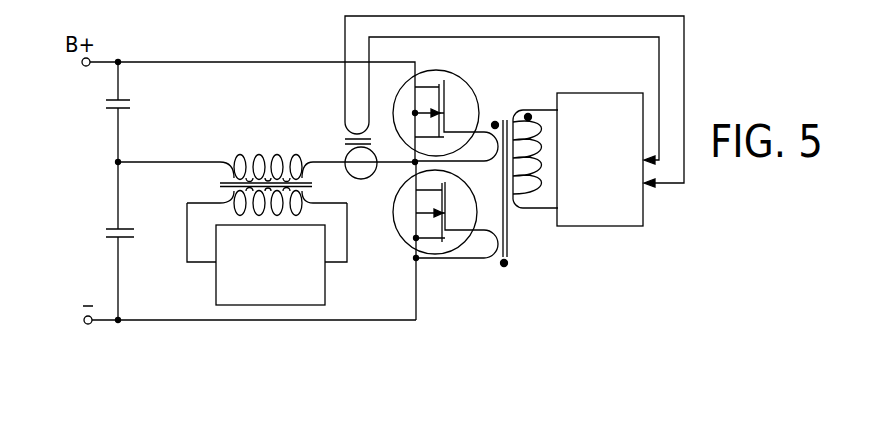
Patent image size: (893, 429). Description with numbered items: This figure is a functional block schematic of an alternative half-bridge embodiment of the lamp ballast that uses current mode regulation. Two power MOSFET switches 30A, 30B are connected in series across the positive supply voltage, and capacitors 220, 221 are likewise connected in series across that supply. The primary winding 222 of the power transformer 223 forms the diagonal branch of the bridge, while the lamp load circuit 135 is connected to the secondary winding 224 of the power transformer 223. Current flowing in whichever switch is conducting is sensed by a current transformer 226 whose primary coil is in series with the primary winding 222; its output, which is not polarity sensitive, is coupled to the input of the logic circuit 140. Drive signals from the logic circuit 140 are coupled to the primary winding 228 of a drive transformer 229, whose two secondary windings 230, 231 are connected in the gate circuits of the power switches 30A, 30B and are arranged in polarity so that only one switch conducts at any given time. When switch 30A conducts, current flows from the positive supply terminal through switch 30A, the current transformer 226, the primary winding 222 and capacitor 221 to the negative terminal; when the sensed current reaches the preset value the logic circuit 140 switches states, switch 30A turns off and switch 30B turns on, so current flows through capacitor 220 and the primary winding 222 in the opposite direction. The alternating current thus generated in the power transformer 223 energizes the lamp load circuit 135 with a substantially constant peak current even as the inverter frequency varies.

The capacitor 220 is at (108, 99).
The capacitor 221 is at (110, 228).
The primary winding 222 is at (260, 157).
The power transformer 223 is at (244, 154).
The secondary winding 224 is at (213, 200).
The lamp load circuit 135 is at (216, 282).
The current transformer 226 is at (356, 186).
The MOSFET power switch 30A is at (452, 72).
The switching transistor 30B is at (400, 240).
The drive transformer 229 is at (542, 175).
The secondary winding 230 is at (495, 121).
The secondary winding 231 is at (504, 266).
The primary winding 228 is at (530, 116).
The logic circuit 140 is at (647, 203).